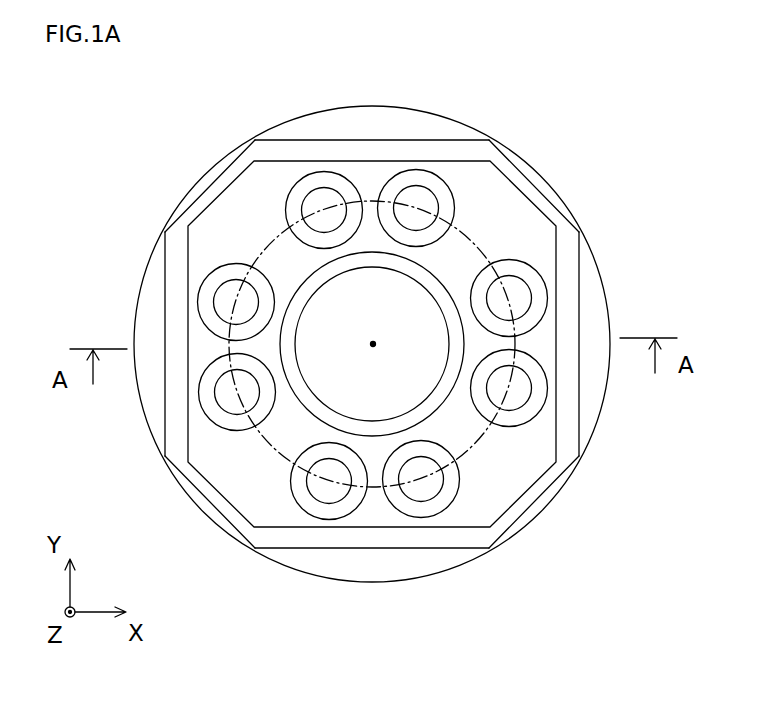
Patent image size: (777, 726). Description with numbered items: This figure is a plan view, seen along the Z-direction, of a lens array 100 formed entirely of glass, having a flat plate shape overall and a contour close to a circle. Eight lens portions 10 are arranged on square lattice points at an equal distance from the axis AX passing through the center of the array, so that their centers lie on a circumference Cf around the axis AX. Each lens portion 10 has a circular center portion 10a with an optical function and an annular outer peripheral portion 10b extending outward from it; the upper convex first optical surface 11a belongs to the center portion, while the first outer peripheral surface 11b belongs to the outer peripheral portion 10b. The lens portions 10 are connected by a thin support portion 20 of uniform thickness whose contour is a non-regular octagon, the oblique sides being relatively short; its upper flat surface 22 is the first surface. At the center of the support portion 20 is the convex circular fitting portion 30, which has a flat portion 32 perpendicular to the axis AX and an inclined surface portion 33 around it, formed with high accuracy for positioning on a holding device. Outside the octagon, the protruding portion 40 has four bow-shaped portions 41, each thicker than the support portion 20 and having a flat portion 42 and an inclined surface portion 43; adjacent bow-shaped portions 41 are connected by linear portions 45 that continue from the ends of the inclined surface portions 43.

The lens array 100 is at (602, 128).
The lens portion 10 is at (371, 343).
The center portion 10a is at (422, 198).
The outer peripheral portion 10b is at (442, 200).
The first optical surface 11a is at (230, 408).
The first outer peripheral surface 11b is at (212, 403).
The support portion 20 is at (513, 223).
The flat surface 22 is at (480, 478).
The fitting portion 30 is at (310, 408).
The flat portion 32 is at (350, 328).
The inclined surface portion 33 is at (315, 285).
The protruding portion 40 is at (608, 418).
The bow-shaped portion 41 is at (298, 132).
The flat portion 42 is at (348, 127).
The inclined surface portion 43 is at (327, 152).
The linear portion 45 is at (522, 180).
The axis AX is at (373, 344).
The circumference Cf is at (265, 247).